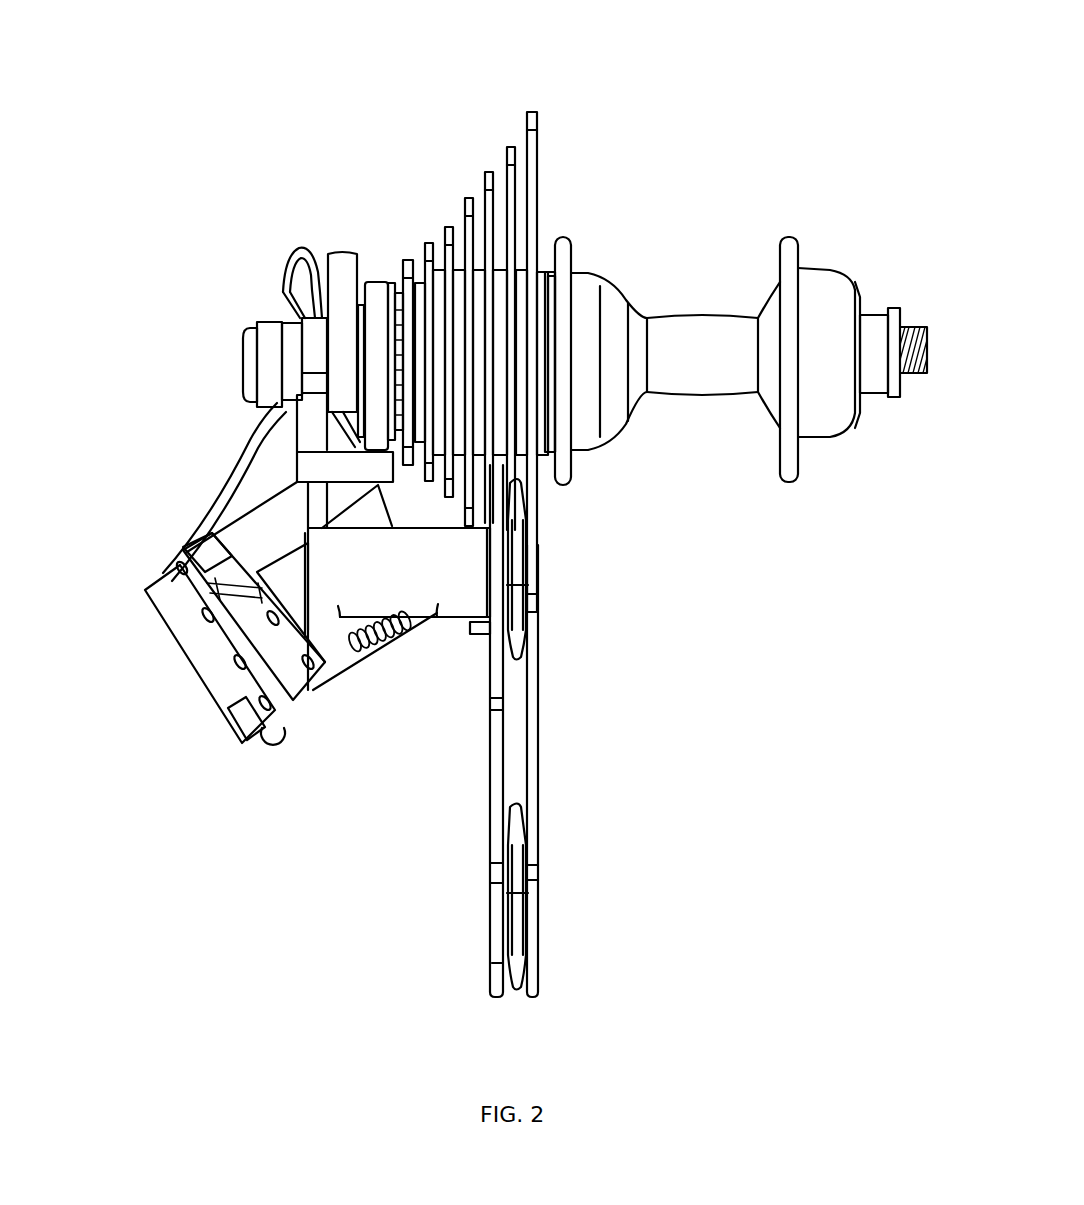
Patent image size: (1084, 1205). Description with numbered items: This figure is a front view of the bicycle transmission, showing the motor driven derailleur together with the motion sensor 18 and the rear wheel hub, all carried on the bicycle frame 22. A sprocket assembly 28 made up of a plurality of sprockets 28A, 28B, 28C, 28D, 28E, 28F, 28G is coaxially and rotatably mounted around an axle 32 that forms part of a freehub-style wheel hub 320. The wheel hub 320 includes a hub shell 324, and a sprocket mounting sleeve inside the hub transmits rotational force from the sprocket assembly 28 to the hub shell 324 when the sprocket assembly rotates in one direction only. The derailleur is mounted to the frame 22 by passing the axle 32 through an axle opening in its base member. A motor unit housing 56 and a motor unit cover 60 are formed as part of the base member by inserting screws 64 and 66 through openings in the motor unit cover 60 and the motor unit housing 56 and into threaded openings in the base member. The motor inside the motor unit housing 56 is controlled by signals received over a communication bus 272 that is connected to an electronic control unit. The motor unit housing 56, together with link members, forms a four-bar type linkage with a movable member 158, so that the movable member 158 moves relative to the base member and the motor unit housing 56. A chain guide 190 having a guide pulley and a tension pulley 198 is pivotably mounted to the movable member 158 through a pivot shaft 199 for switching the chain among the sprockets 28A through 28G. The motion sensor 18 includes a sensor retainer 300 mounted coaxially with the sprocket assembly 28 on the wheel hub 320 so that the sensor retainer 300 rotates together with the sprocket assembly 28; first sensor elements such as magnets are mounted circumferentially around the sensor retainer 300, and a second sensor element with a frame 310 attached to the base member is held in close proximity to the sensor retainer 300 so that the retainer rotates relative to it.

The motion sensor 18 is at (180, 284).
The bicycle frame 22 is at (330, 252).
The sprocket assembly 28 is at (385, 108).
The sprocket 28A is at (413, 262).
The sprocket 28B is at (432, 247).
The sprocket 28C is at (452, 229).
The sprocket 28D is at (472, 200).
The sprocket 28E is at (492, 174).
The sprocket 28F is at (514, 148).
The sprocket 28G is at (533, 112).
The axle 32 is at (905, 326).
The motor unit housing 56 is at (170, 627).
The motor unit cover 60 is at (293, 703).
The screw 64 is at (165, 575).
The screw 66 is at (234, 727).
The movable member 158 is at (438, 607).
The chain guide 190 is at (538, 738).
The tension pulley 198 is at (520, 893).
The pivot shaft 199 is at (530, 588).
The communication bus 272 is at (190, 527).
The sensor retainer 300 is at (383, 285).
The frame 310 is at (295, 434).
The wheel hub 320 is at (676, 274).
The hub shell 324 is at (706, 395).